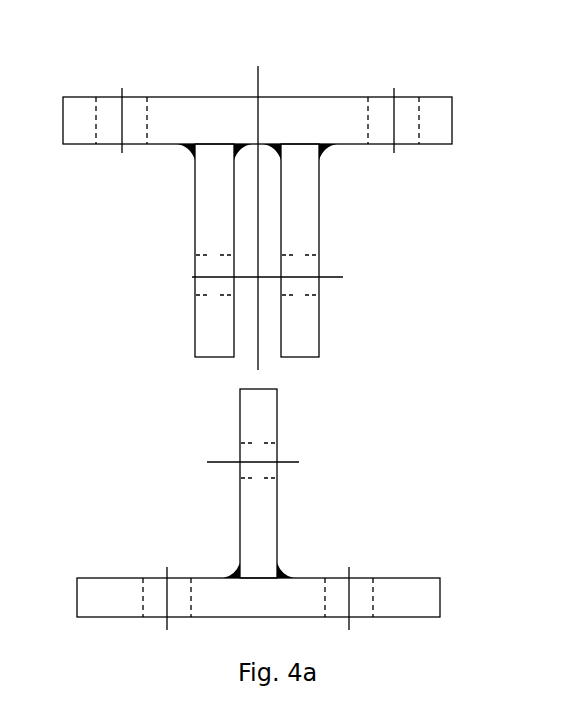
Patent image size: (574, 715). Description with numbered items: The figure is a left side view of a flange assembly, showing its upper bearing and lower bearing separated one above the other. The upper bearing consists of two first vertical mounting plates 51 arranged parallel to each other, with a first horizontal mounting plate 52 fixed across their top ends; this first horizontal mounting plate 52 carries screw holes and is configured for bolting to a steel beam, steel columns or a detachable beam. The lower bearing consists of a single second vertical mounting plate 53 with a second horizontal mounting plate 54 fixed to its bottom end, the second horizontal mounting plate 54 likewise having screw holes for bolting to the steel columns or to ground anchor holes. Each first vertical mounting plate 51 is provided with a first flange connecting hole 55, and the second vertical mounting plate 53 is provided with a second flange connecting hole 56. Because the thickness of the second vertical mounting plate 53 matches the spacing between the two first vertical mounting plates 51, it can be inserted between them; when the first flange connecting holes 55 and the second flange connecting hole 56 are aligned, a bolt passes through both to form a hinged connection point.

The first vertical mounting plate 51 is at (300, 219).
The first horizontal mounting plate 52 is at (300, 115).
The second vertical mounting plate 53 is at (268, 413).
The second horizontal mounting plate 54 is at (300, 592).
The first flange connecting hole 55 is at (195, 277).
The second flange connecting hole 56 is at (240, 462).